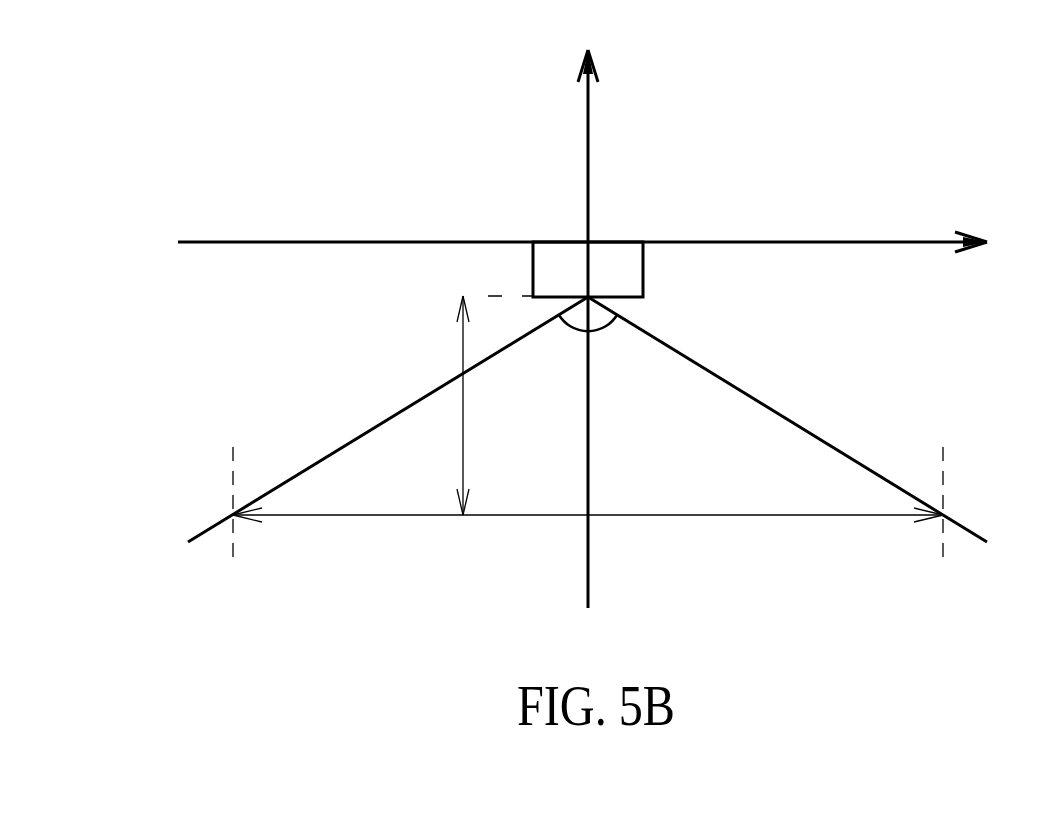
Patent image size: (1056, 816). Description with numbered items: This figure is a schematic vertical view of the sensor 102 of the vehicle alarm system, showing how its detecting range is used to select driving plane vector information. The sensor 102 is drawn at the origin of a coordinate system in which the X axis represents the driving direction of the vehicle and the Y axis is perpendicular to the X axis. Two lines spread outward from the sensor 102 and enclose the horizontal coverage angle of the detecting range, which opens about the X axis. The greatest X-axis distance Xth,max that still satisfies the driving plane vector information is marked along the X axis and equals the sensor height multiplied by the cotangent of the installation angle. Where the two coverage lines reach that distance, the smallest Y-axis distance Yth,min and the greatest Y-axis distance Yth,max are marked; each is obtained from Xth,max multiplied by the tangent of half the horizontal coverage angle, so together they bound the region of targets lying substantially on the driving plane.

The sensor 102 is at (617, 250).
The X axis X is at (587, 309).
The Y axis Y is at (595, 241).
The greatest X-axis distance Xth,max is at (512, 405).
The smallest Y-axis distance Yth,min is at (241, 523).
The greatest Y-axis distance Yth,max is at (949, 523).